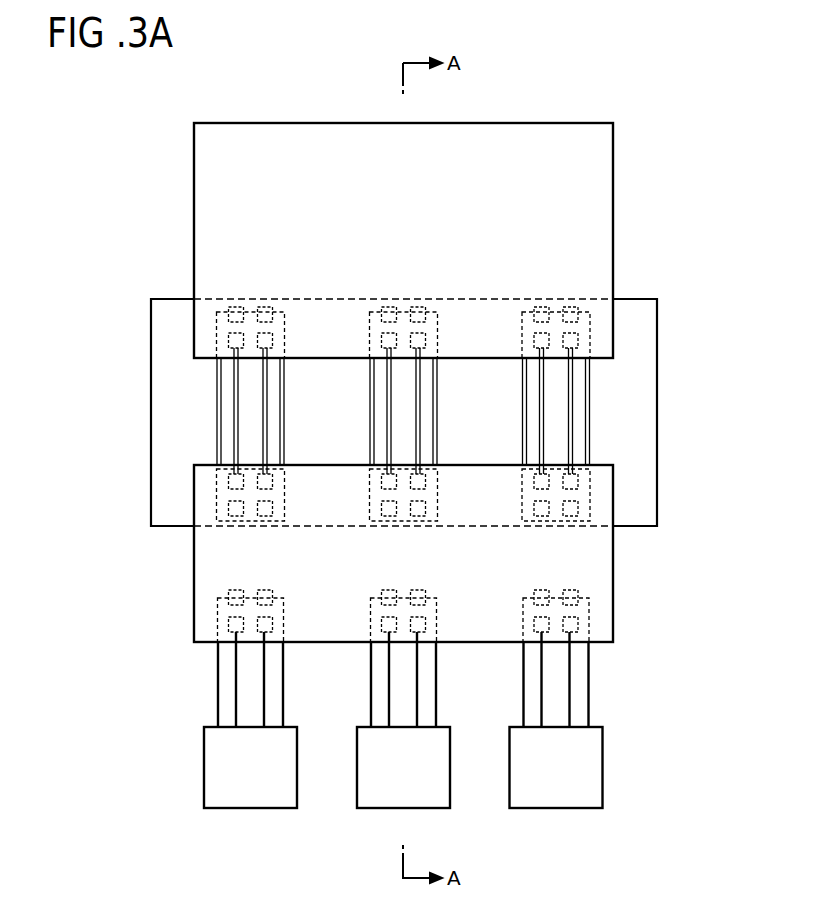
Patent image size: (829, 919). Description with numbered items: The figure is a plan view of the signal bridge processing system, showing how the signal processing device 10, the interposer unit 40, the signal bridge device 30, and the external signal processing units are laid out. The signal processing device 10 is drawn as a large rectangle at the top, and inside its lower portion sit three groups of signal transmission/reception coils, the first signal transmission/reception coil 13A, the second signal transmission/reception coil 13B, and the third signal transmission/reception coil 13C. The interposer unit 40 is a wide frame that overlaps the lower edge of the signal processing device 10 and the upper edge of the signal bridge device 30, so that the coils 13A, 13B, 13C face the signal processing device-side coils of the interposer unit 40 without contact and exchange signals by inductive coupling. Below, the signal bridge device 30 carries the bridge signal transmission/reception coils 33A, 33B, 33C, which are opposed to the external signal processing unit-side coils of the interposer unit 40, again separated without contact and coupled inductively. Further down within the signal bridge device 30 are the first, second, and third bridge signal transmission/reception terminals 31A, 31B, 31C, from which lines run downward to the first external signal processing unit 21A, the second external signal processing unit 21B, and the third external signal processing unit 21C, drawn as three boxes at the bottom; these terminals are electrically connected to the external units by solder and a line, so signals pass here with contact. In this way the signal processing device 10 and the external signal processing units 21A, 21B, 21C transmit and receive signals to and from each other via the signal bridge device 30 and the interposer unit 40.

The signal processing device 10 is at (613, 170).
The signal bridge device 30 is at (613, 596).
The interposer unit 40 is at (657, 405).
The first signal transmission/reception coil 13A is at (250, 310).
The second signal transmission/reception coil 13B is at (403, 310).
The third signal transmission/reception coil 13C is at (556, 310).
The first bridge signal transmission/reception coil 33A is at (250, 520).
The second bridge signal transmission/reception coil 33B is at (403, 520).
The third bridge signal transmission/reception coil 33C is at (556, 520).
The first bridge signal transmission/reception terminal 31A is at (250, 592).
The second bridge signal transmission/reception terminal 31B is at (405, 592).
The third bridge signal transmission/reception terminal 31C is at (557, 592).
The first external signal processing unit 21A is at (250, 808).
The second external signal processing unit 21B is at (403, 808).
The third external signal processing unit 21C is at (556, 808).